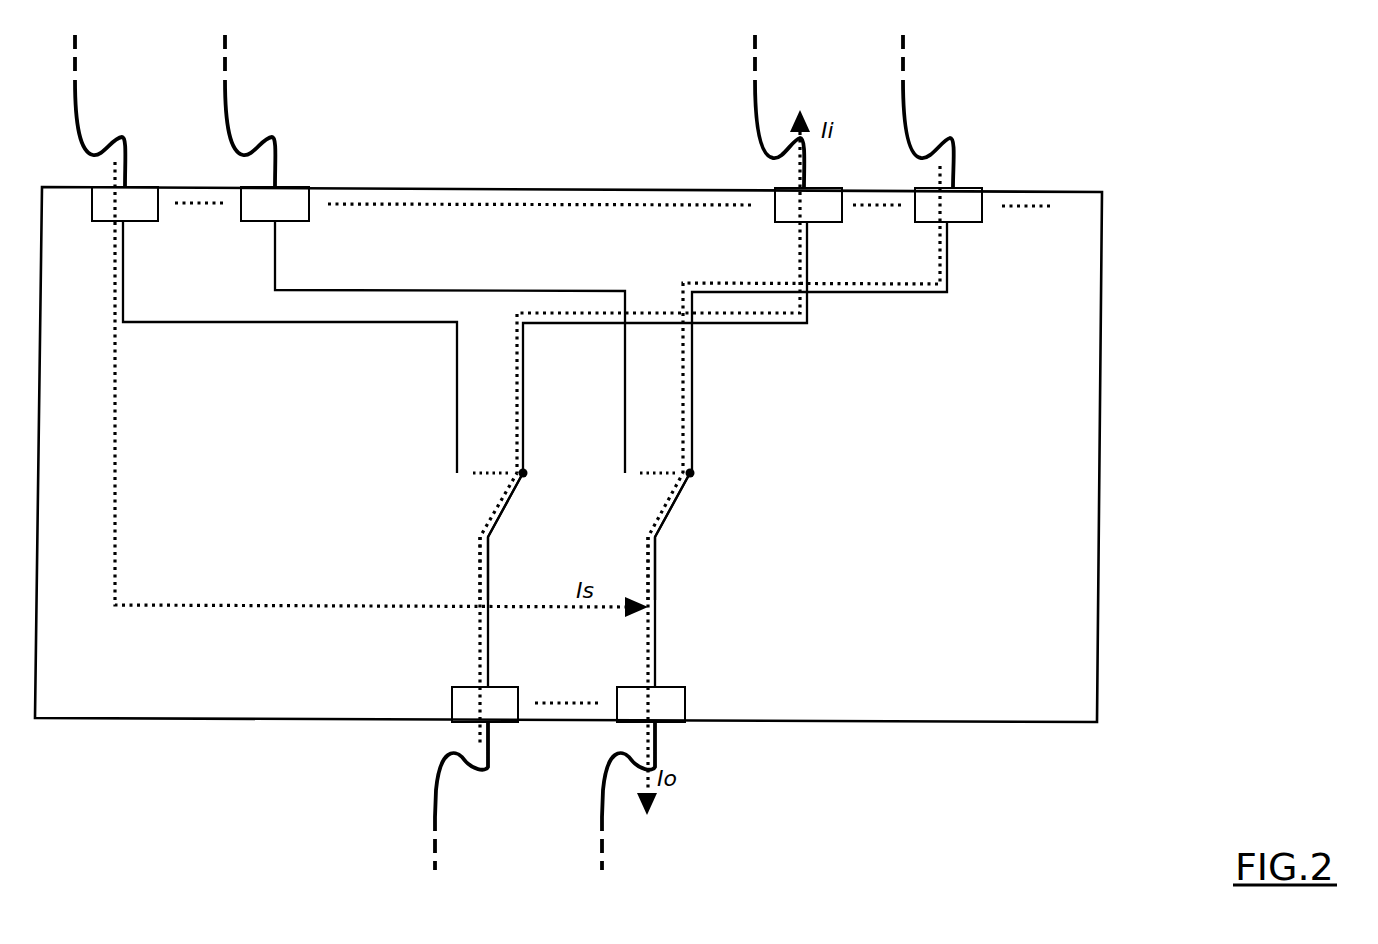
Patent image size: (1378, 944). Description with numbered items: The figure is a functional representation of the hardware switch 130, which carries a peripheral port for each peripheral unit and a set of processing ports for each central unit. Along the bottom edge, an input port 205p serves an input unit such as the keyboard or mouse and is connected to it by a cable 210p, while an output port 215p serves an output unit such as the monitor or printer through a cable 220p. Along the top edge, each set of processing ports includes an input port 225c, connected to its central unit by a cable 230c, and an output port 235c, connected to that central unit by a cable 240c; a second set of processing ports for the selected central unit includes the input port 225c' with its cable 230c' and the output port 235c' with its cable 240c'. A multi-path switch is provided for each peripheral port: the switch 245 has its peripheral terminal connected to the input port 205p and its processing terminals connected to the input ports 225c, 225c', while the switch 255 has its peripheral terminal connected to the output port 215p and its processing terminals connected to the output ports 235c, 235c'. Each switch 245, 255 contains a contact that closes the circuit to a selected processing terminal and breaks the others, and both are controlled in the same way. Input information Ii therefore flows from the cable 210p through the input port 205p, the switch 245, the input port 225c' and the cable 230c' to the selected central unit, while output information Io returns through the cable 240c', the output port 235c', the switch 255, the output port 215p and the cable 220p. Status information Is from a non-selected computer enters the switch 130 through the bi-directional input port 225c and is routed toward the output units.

The switch 130 is at (622, 454).
The input port 205p is at (530, 682).
The output port 215p is at (695, 682).
The cable 210p is at (408, 796).
The cable 220p is at (575, 796).
The input port 225c is at (168, 226).
The output port 235c is at (317, 226).
The cable 230c is at (136, 111).
The cable 240c is at (286, 111).
The input port 225c' is at (852, 227).
The output port 235c' is at (995, 227).
The cable 230c' is at (818, 111).
The cable 240c' is at (967, 111).
The switch 245 is at (542, 535).
The switch 255 is at (708, 535).